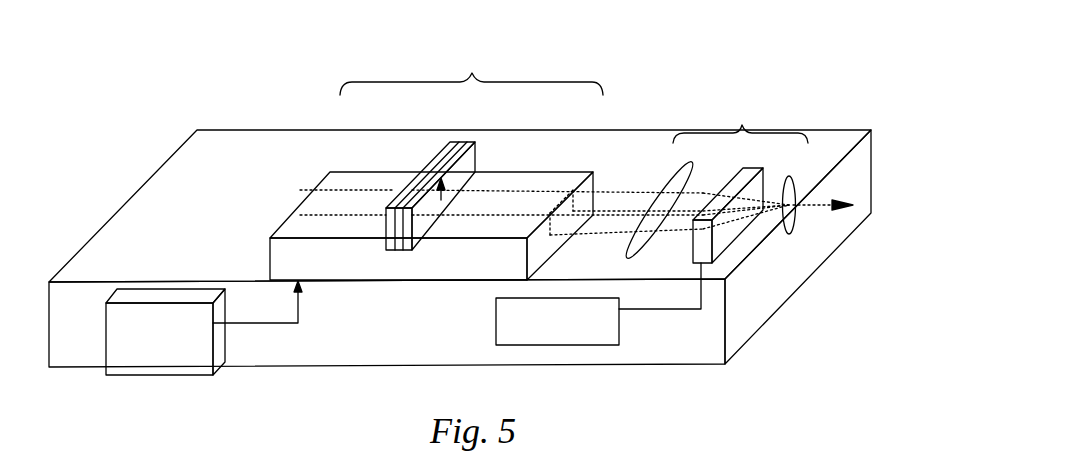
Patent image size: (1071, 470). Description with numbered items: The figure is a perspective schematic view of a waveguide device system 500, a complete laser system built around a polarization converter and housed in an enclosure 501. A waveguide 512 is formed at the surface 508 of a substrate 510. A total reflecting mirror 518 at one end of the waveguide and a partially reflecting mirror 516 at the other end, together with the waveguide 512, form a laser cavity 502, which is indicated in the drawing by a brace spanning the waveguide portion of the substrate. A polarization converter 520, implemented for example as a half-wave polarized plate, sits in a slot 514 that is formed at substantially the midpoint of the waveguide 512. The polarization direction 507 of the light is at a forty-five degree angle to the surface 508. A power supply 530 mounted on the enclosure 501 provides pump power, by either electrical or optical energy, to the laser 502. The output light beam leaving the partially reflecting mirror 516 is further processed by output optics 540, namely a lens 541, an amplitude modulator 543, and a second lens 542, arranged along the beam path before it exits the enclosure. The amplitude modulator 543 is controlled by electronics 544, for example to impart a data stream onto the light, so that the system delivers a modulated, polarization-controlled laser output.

The waveguide device system 500 is at (460, 234).
The enclosure 501 is at (708, 357).
The laser cavity 502 is at (472, 73).
The polarization direction 507 is at (447, 184).
The surface 508 is at (370, 178).
The substrate 510 is at (463, 272).
The waveguide 512 is at (526, 198).
The slot 514 is at (383, 250).
The partially reflecting mirror 516 is at (598, 180).
The total reflecting mirror 518 is at (328, 178).
The polarization converter 520 is at (442, 151).
The power supply 530 is at (216, 347).
The output optics assembly 540 is at (714, 186).
The lens 541 is at (676, 172).
The lens 542 is at (787, 237).
The amplitude modulator 543 is at (760, 167).
The electronics 544 is at (622, 332).